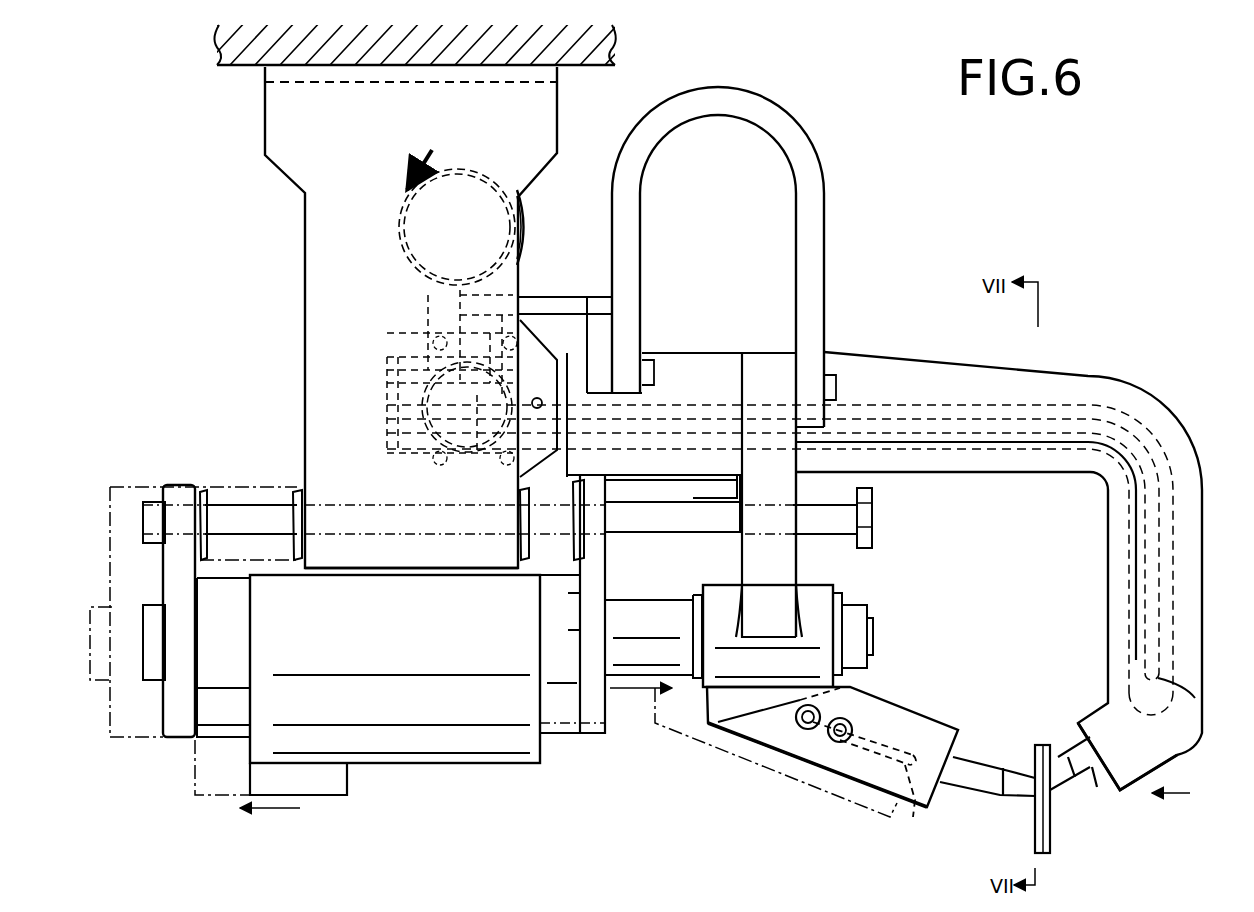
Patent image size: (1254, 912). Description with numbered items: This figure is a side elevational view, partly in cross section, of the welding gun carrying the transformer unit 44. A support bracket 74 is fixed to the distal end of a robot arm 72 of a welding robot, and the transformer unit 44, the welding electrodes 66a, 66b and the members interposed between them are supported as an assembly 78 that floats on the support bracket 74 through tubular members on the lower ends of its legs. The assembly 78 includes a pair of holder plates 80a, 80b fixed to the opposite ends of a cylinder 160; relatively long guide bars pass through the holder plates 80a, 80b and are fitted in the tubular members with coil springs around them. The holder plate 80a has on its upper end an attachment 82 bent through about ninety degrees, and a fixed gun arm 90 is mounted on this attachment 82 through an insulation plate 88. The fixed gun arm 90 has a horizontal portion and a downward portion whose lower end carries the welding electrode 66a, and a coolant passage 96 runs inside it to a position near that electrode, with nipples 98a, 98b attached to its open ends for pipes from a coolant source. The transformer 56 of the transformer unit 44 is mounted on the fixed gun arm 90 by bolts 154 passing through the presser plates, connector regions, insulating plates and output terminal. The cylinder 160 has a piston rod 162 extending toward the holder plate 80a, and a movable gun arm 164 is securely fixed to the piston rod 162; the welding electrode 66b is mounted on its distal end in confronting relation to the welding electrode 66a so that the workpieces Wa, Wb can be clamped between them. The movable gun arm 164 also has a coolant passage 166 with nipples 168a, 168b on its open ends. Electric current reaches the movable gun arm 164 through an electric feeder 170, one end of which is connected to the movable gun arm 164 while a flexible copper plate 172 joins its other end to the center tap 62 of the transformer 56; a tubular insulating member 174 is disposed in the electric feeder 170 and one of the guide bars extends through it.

The transformer unit 44 is at (886, 102).
The transformer 56 is at (535, 212).
The center tap 62 is at (568, 294).
The welding electrode 66a is at (1092, 779).
The welding electrode 66b is at (965, 770).
The robot arm 72 is at (615, 47).
The support bracket 74 is at (262, 122).
The assembly 78 is at (104, 718).
The holder plate 80a is at (593, 735).
The holder plate 80b is at (175, 713).
The attachment 82 is at (647, 495).
The insulation plate 88 is at (690, 482).
The fixed gun arm 90 is at (866, 362).
The coolant passage 96 is at (1148, 440).
The nipple 98a is at (390, 410).
The nipple 98b is at (390, 447).
The bolt 154 is at (541, 406).
The cylinder 160 is at (492, 735).
The piston rod 162 is at (687, 662).
The movable gun arm 164 is at (892, 702).
The coolant passage 166 is at (928, 847).
The nipple 168a is at (840, 742).
The nipple 168b is at (805, 729).
The electric feeder 170 is at (818, 610).
The flexible copper plate 172 is at (812, 225).
The tubular insulating member 174 is at (797, 534).
The workpiece Wa is at (1050, 827).
The workpiece Wb is at (1038, 745).